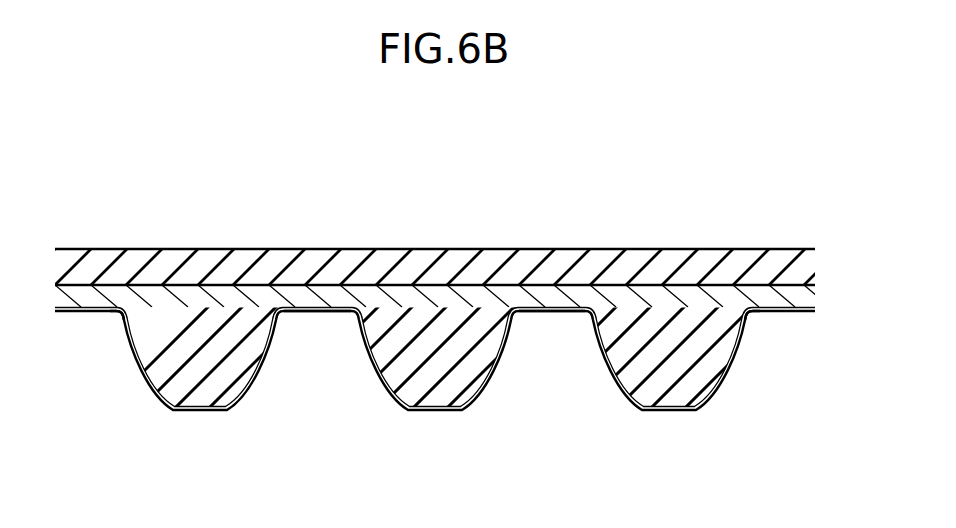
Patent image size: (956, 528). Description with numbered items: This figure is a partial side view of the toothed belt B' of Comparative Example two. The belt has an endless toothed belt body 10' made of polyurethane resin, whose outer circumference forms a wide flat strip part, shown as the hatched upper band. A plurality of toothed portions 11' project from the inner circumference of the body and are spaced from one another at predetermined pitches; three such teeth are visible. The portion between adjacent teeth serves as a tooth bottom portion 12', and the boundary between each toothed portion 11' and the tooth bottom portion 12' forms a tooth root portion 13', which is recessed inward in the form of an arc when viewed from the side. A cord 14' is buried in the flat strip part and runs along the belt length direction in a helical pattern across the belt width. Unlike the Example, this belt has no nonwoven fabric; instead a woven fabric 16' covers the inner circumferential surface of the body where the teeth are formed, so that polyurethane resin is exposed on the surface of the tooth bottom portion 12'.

The toothed belt B' is at (429, 304).
The toothed belt body 10' is at (429, 234).
The toothed portions 11' is at (461, 397).
The tooth bottom portion 12' is at (434, 352).
The tooth root portion 13' is at (436, 352).
The cord 14' is at (442, 251).
The woven fabric 16' is at (435, 390).